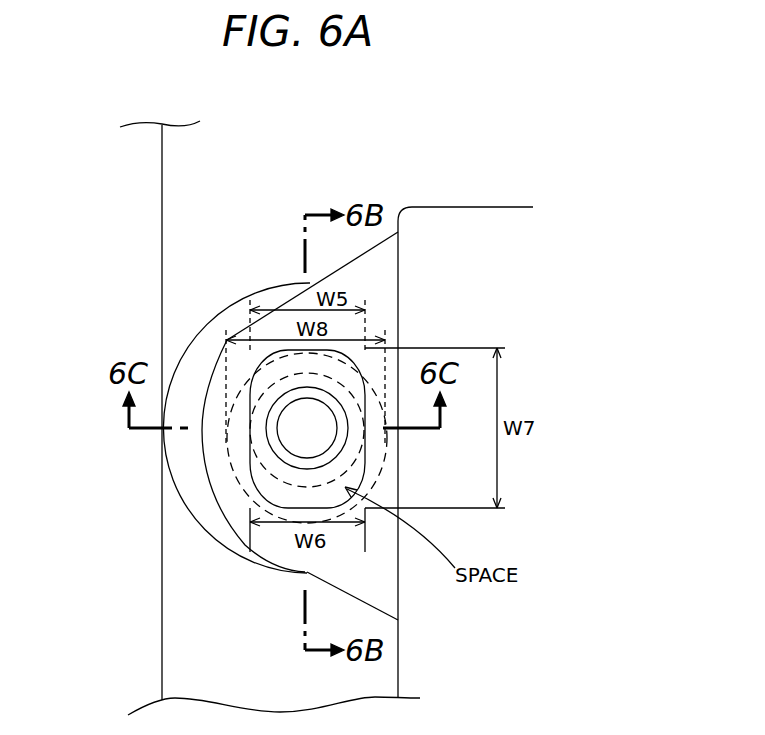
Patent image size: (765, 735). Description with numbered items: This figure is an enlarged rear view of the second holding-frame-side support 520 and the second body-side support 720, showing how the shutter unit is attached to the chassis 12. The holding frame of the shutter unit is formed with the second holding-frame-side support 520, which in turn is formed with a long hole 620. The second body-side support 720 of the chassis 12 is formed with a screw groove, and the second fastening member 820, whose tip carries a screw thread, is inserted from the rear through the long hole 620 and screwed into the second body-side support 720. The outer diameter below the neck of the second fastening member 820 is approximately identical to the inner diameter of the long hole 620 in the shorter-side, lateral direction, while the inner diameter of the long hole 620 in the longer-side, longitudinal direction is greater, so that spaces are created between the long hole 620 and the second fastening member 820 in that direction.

The chassis 12 is at (190, 190).
The second holding-frame-side support 520 is at (360, 565).
The long hole 620 is at (385, 456).
The second body-side support 720 is at (203, 497).
The second fastening member 820 is at (232, 458).